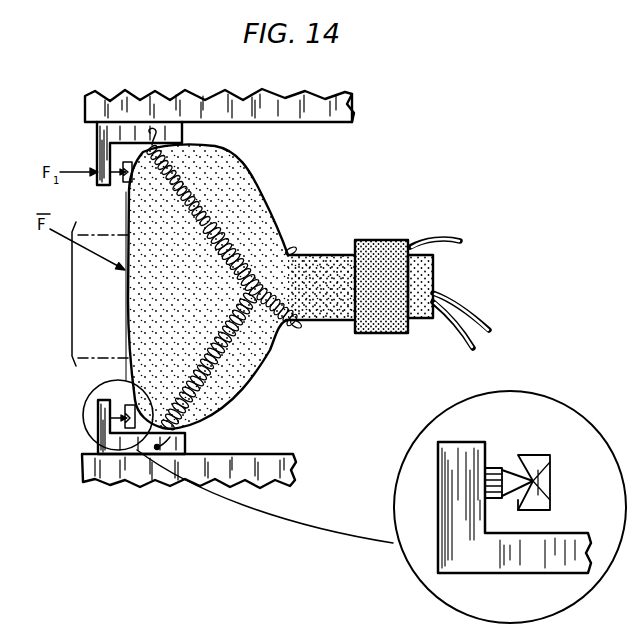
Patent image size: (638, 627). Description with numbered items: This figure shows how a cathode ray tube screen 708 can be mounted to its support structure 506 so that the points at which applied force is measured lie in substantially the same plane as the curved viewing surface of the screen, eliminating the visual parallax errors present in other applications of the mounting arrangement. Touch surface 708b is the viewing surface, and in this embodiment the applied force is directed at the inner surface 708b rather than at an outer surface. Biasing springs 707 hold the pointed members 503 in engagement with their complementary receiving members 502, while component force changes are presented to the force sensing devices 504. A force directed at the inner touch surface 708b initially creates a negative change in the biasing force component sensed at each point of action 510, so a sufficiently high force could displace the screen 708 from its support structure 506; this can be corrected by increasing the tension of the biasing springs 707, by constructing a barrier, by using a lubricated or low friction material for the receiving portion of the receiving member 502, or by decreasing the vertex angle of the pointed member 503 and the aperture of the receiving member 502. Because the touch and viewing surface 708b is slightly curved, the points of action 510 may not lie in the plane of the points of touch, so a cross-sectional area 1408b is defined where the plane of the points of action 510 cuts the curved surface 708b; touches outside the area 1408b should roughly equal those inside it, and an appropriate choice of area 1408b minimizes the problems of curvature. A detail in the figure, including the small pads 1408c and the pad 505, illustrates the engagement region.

The biasing spring 707 is at (210, 218).
The cathode ray tube screen 708 is at (243, 367).
The cross-sectional area 1408b is at (75, 294).
The contact pads 1408c is at (128, 189).
The inner touch surface 708b is at (133, 378).
The receiving member 502 is at (549, 496).
The pointed member 503 is at (516, 505).
The force sensing device 504 is at (506, 475).
The pad 505 is at (492, 468).
The support structure 506 is at (520, 560).
The point of action 510 is at (548, 467).